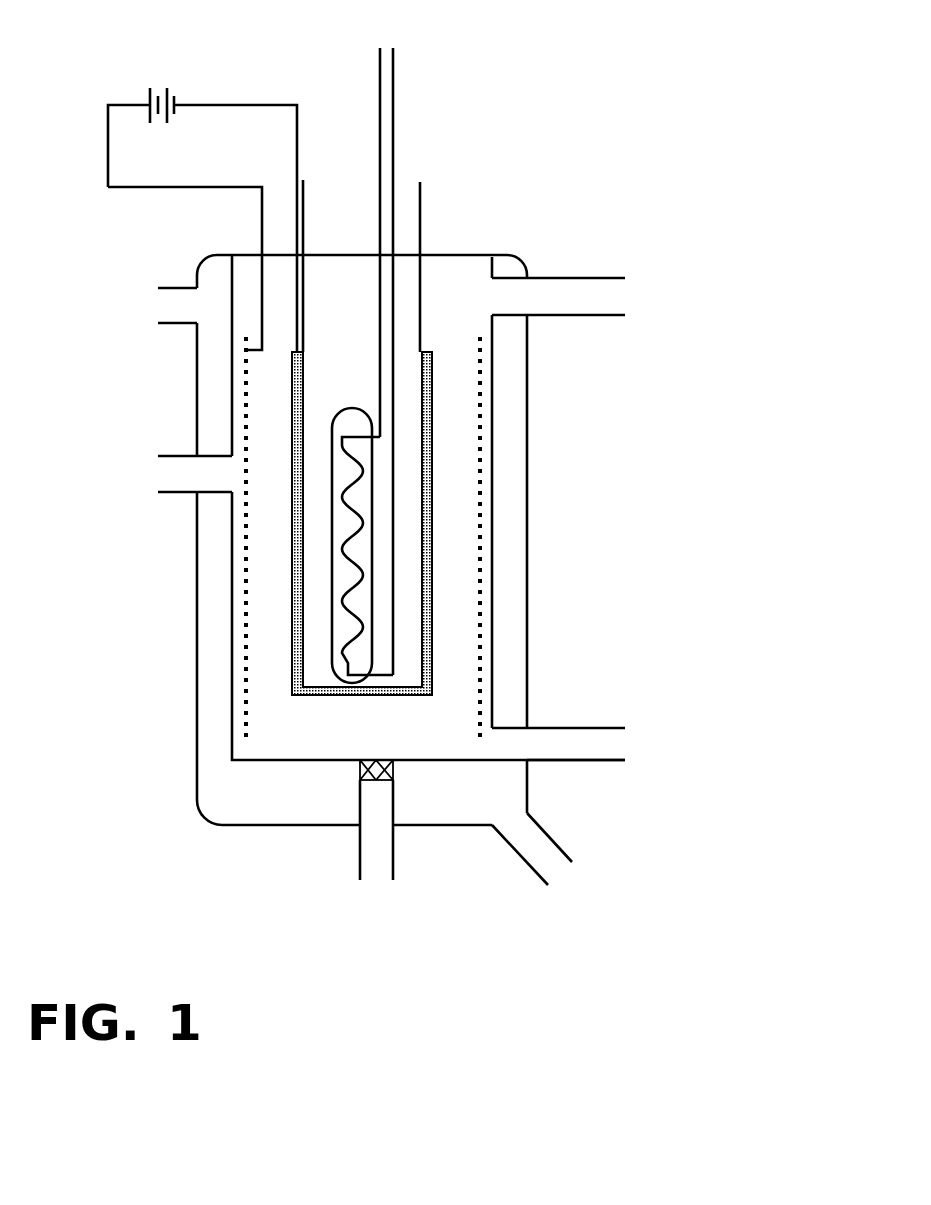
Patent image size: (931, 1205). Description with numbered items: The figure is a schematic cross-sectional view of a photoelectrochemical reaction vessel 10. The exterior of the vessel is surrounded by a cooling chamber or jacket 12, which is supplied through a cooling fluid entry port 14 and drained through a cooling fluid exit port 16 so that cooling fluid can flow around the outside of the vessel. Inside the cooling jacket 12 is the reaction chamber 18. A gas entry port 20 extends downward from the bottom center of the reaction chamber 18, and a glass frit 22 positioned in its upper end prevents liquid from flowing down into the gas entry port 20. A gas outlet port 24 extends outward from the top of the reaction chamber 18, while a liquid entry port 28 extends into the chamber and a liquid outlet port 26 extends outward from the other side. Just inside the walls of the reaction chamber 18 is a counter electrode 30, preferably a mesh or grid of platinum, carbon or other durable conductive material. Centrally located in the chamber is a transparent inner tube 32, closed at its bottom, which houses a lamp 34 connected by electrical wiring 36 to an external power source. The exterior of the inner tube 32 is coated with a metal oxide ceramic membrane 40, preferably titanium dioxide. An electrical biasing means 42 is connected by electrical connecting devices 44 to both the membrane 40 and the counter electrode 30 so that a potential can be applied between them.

The photoelectrochemical reaction vessel 10 is at (172, 743).
The cooling chamber or jacket 12 is at (192, 615).
The cooling fluid entry port 14 is at (557, 836).
The cooling fluid exit port 16 is at (170, 325).
The reaction chamber 18 is at (492, 488).
The gas entry port 20 is at (352, 852).
The glass frit 22 is at (380, 778).
The gas outlet port 24 is at (582, 320).
The liquid outlet port 26 is at (167, 497).
The liquid entry port 28 is at (578, 722).
The counter electrode 30 is at (485, 562).
The inner tube 32 is at (422, 285).
The lamp 34 is at (340, 407).
The electrical wiring 36 is at (383, 120).
The metal oxide ceramic membrane 40 is at (403, 698).
The electrical biasing means 42 is at (178, 93).
The electrical connecting devices 44 is at (213, 182).